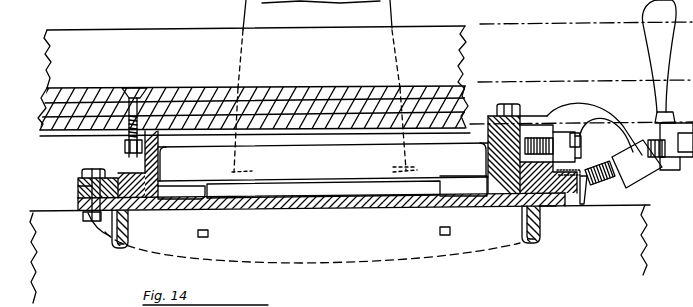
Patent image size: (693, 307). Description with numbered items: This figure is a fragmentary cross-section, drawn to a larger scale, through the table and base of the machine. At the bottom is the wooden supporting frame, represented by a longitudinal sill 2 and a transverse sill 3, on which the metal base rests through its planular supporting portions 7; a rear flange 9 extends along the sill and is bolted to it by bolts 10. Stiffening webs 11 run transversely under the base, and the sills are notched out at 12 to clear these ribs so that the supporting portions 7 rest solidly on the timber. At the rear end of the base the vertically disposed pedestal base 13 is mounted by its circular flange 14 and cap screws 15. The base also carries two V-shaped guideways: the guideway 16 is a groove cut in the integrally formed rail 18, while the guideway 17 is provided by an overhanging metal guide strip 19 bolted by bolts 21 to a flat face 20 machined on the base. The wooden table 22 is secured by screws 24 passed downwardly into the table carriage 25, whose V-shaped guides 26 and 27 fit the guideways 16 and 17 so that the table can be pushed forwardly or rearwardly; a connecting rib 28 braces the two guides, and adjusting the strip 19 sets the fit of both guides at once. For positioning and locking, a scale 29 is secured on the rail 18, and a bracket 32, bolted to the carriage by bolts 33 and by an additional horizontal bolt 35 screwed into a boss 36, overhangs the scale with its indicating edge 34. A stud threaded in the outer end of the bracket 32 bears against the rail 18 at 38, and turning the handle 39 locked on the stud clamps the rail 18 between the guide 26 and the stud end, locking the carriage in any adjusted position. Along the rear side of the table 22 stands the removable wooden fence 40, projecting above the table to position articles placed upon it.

The supporting frame member or sill 2 is at (58, 213).
The transverse sill 3 is at (683, 169).
The supporting portion 7 is at (143, 211).
The rear flange 9 is at (300, 262).
The bolt 10 is at (210, 236).
The stiffening web 11 is at (118, 232).
The notch 12 is at (131, 237).
The pedestal base 13 is at (396, 14).
The circular flange 14 is at (207, 187).
The cap screw 15 is at (253, 170).
The guideway 16 is at (543, 206).
The guideway 17 is at (107, 173).
The rail 18 is at (547, 210).
The guide strip 19 is at (78, 190).
The flat face 20 is at (141, 183).
The bolt 21 is at (87, 173).
The table 22 is at (176, 88).
The screw 24 is at (133, 98).
The table carriage 25 is at (488, 151).
The V-shaped portion or guide 26 is at (503, 212).
The V-shaped portion or guide 27 is at (121, 176).
The connecting rib 28 is at (203, 152).
The scale 29 is at (565, 206).
The bracket 32 is at (566, 116).
The bolt 33 is at (524, 113).
The indicating edge 34 is at (570, 153).
The bolt 35 is at (580, 120).
The boss 36 is at (533, 134).
The engagement point on rail 38 is at (594, 186).
The handle 39 is at (667, 43).
The fence 40 is at (191, 28).